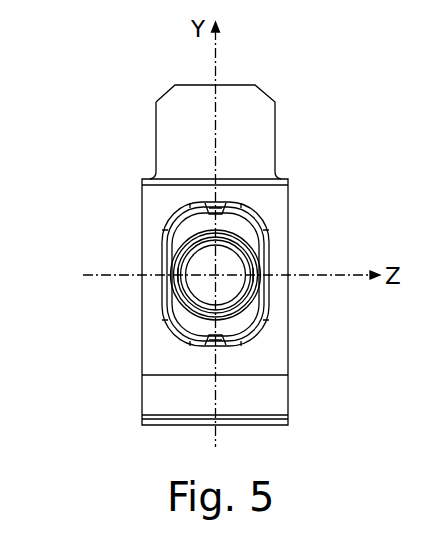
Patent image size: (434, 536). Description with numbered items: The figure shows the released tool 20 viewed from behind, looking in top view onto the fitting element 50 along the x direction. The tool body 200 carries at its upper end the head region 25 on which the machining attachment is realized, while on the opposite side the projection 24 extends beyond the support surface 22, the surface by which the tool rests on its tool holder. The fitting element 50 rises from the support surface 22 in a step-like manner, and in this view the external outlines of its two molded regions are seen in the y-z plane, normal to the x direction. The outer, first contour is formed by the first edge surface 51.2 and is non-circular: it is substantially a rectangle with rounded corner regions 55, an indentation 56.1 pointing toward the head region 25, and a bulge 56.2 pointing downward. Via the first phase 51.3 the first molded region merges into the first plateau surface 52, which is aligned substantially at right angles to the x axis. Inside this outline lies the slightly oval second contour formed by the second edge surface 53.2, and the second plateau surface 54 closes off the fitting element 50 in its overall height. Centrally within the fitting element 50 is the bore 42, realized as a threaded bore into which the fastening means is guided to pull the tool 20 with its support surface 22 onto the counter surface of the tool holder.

The tool 20 is at (128, 143).
The support surface 22 is at (272, 200).
The projection 24 is at (157, 398).
The head region 25 is at (240, 100).
The bore 42 is at (200, 290).
The fitting element 50 is at (177, 260).
The first edge surface 51.2 is at (262, 208).
The first phase 51.3 is at (172, 222).
The first plateau surface 52 is at (262, 225).
The second edge surface 53.2 is at (253, 283).
The second plateau surface 54 is at (260, 310).
The rounded corner regions 55 is at (173, 207).
The indentation 56.1 is at (217, 205).
The bulge 56.2 is at (221, 348).
The tool body 200 is at (155, 360).